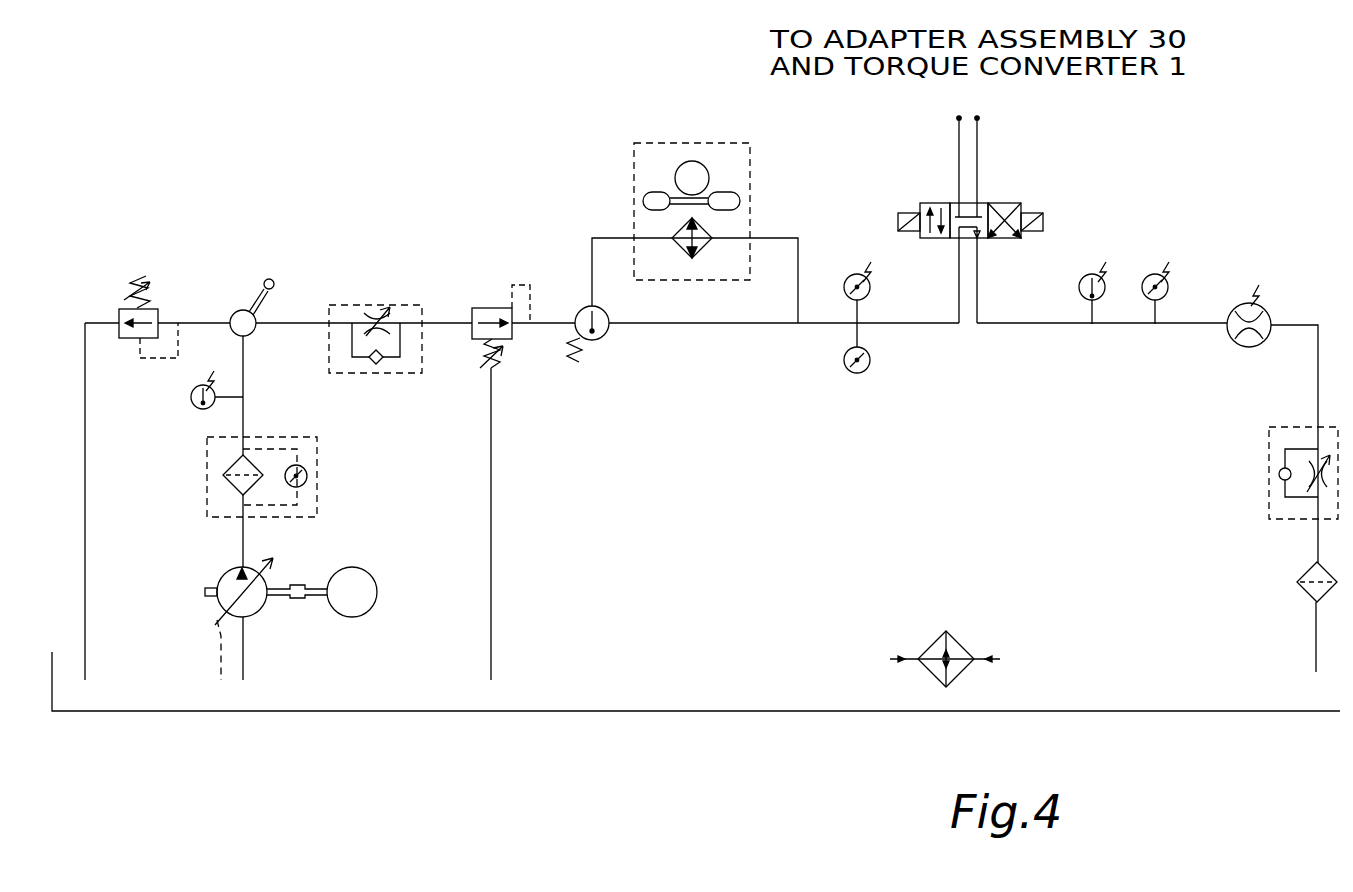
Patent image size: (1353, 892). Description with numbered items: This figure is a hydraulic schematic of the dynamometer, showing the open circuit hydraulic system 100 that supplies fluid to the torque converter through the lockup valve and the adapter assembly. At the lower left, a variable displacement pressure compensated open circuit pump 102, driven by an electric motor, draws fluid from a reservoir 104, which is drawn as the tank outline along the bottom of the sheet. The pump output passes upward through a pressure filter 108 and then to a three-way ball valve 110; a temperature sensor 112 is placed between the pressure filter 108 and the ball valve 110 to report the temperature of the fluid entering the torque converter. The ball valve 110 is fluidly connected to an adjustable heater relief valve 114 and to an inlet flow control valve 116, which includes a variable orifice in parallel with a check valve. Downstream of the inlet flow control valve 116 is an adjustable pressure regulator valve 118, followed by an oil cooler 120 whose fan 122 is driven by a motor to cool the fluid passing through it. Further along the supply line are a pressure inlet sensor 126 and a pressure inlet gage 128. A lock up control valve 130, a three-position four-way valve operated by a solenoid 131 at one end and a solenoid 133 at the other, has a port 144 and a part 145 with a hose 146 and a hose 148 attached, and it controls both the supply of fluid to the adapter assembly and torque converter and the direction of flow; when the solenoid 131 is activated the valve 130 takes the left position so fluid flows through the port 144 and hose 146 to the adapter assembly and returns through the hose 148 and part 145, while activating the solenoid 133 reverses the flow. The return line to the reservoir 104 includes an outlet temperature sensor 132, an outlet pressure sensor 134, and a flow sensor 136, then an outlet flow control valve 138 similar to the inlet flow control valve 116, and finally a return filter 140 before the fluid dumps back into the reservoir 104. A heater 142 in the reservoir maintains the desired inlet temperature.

The open circuit hydraulic system 100 is at (258, 197).
The variable displacement pressure compensated open circuit pump 102 is at (252, 617).
The reservoir 104 is at (568, 711).
The pressure filter 108 is at (207, 470).
The 3-way ball valve 110 is at (240, 312).
The temperature sensor 112 is at (188, 389).
The adjustable heater relief valve 114 is at (118, 305).
The inlet flow control valve 116 is at (376, 305).
The adjustable pressure regulator valve 118 is at (490, 307).
The oil cooler 120 is at (665, 190).
The fan 122 is at (646, 196).
The pressure inlet sensor 126 is at (877, 277).
The pressure inlet gage 128 is at (877, 350).
The lock up control valve 130 is at (974, 171).
The solenoid 131 is at (905, 213).
The outlet temperature sensor 132 is at (1077, 280).
The solenoid 133 is at (1035, 213).
The outlet pressure sensor 134 is at (1178, 272).
The flow sensor 136 is at (1275, 300).
The outlet flow control valve 138 is at (1270, 413).
The return filter 140 is at (1300, 570).
The heater 142 is at (962, 646).
The port 144 is at (957, 205).
The part 145 is at (978, 200).
The hose 146 is at (957, 145).
The hose 148 is at (978, 128).